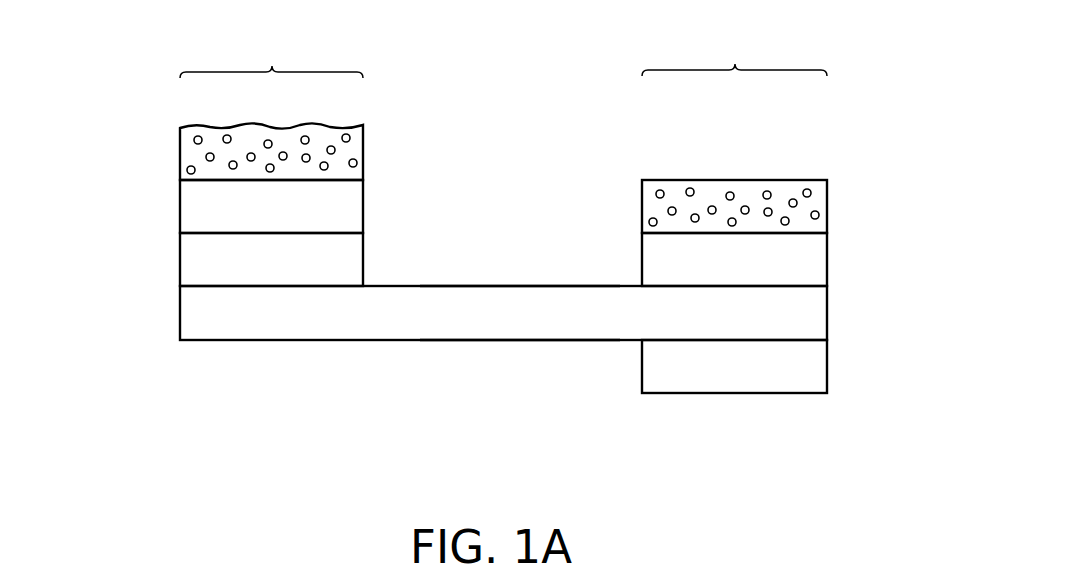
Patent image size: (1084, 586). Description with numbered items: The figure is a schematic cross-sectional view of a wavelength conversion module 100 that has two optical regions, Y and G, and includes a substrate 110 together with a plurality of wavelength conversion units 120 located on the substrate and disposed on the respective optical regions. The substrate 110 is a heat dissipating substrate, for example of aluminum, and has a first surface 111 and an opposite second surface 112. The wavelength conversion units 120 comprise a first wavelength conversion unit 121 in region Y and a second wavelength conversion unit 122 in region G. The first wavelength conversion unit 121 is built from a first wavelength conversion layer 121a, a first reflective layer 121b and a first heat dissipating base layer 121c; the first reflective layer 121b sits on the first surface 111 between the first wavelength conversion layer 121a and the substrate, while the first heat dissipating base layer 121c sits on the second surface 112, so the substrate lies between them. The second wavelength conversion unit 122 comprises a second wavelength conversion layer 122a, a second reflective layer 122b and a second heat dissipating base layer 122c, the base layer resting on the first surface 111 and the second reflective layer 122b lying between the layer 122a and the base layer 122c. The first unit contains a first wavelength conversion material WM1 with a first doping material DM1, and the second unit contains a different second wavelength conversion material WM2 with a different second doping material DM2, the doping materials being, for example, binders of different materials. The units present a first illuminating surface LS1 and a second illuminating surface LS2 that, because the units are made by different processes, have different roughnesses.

The wavelength conversion module 100 is at (147, 44).
The substrate 110 is at (198, 314).
The first surface 111 is at (522, 283).
The second surface 112 is at (522, 343).
The wavelength conversion units 120 is at (163, 112).
The first wavelength conversion unit 121 is at (901, 188).
The first wavelength conversion layer 121a is at (815, 205).
The first reflective layer 121b is at (815, 260).
The first heat dissipating base layer 121c is at (815, 367).
The second wavelength conversion unit 122 is at (104, 140).
The second wavelength conversion layer 122a is at (190, 152).
The second reflective layer 122b is at (190, 206).
The second heat dissipating base layer 122c is at (190, 259).
The first illuminating surface LS1 is at (789, 176).
The second illuminating surface LS2 is at (343, 122).
The first doping material DM1 is at (652, 208).
The second doping material DM2 is at (357, 148).
The first wavelength conversion material WM1 is at (656, 193).
The second wavelength conversion material WM2 is at (358, 163).